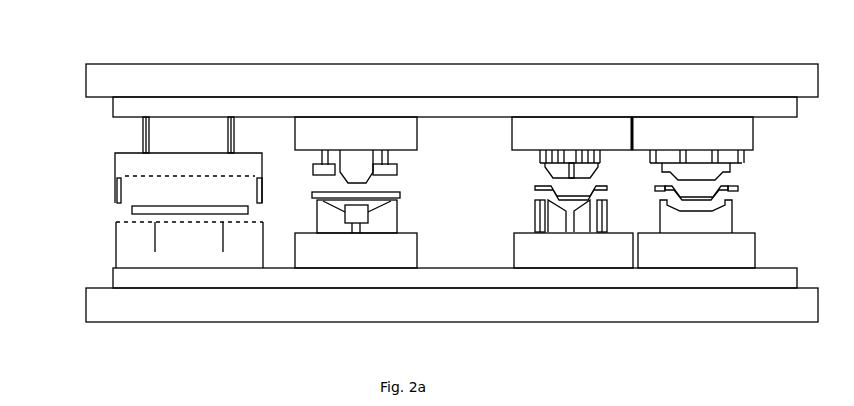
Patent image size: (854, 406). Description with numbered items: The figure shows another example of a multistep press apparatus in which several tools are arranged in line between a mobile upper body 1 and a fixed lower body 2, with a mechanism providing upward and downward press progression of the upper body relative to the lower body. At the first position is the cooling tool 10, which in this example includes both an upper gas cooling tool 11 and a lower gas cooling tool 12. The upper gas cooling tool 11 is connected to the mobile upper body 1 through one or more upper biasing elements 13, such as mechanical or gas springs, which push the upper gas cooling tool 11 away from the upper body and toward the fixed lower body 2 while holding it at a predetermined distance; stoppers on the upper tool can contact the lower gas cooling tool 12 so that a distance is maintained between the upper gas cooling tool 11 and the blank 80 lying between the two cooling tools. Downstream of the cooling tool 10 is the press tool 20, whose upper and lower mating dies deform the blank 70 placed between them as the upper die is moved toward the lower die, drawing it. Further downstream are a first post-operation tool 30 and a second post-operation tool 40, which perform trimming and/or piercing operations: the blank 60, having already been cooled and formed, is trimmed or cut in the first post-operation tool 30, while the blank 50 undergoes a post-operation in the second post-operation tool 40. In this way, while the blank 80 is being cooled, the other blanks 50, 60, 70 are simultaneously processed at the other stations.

The mobile upper body 1 is at (415, 73).
The fixed lower body 2 is at (148, 303).
The cooling tool 10 is at (136, 211).
The upper gas cooling tool 11 is at (112, 157).
The lower gas cooling tool 12 is at (115, 247).
The upper biasing elements 13 is at (138, 133).
The press tool 20 is at (378, 192).
The first post-operation tool 30 is at (556, 147).
The second post-operation tool 40 is at (713, 192).
The blank 50 is at (745, 214).
The blank 60 is at (606, 188).
The blank 70 is at (410, 214).
The blank 80 is at (128, 212).